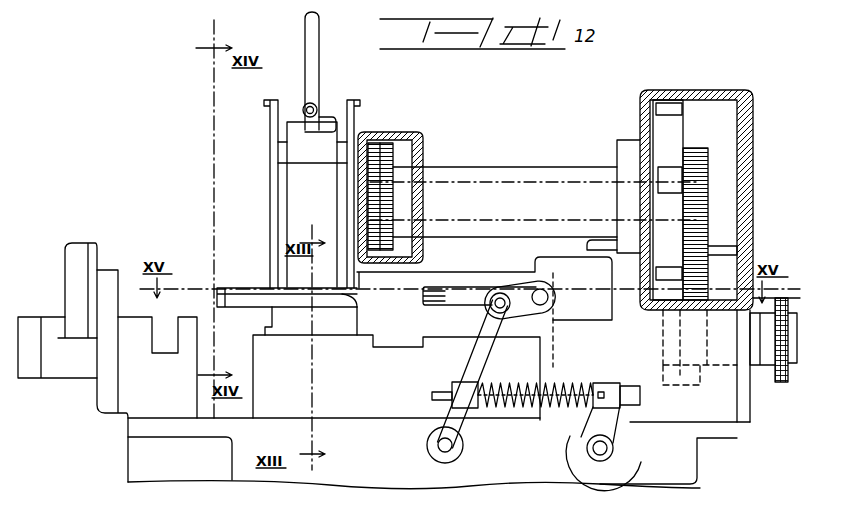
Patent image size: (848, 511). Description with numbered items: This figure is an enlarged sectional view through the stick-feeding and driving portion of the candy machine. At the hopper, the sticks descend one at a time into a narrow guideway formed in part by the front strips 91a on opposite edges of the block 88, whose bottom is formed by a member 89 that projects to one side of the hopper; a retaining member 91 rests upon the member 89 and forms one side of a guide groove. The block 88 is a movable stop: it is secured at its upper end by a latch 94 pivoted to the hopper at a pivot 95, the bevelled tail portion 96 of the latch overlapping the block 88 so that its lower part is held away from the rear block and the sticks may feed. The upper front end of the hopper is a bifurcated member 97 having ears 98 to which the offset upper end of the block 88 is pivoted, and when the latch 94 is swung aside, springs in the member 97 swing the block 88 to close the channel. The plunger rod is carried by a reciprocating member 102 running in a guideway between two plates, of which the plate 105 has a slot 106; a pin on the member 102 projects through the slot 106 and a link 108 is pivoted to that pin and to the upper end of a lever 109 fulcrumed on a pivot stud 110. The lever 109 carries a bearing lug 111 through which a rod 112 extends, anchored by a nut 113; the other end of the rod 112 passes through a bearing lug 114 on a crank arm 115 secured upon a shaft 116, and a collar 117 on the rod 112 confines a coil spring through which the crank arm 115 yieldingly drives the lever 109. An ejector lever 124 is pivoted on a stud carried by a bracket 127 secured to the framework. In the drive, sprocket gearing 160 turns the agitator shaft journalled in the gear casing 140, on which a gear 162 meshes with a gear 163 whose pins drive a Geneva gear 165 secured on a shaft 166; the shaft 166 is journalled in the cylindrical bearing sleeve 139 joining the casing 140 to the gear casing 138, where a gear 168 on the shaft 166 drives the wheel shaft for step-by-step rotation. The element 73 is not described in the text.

The pin 73 is at (328, 107).
The block 88 is at (305, 215).
The member 89 is at (360, 300).
The retaining member 91 is at (272, 286).
The front strips 91a is at (342, 198).
The latch 94 is at (310, 58).
The pivot 95 is at (300, 116).
The bevelled tail portion 96 is at (370, 135).
The bifurcated member 97 is at (340, 112).
The ears 98 is at (282, 150).
The reciprocating member 102 is at (467, 293).
The plate 105 is at (425, 320).
The slot 106 is at (462, 287).
The link 108 is at (527, 303).
The lever 109 is at (497, 413).
The pivot stud 110 is at (447, 450).
The bearing lug 111 is at (468, 390).
The rod 112 is at (563, 383).
The nut 113 is at (433, 396).
The bearing lug 114 is at (633, 398).
The crank arm 115 is at (630, 432).
The shaft 116 is at (615, 447).
The collar 117 is at (603, 383).
The ejector lever 124 is at (86, 292).
The bracket 127 is at (108, 293).
The gear casing 138 is at (420, 163).
The cylindrical bearing sleeve 139 is at (487, 175).
The gear casing 140 is at (710, 75).
The sprocket gearing 160 is at (775, 378).
The gear 162 is at (688, 392).
The gear 163 is at (703, 207).
The Geneva gear 165 is at (660, 153).
The shaft 166 is at (518, 200).
The gear 168 is at (385, 205).